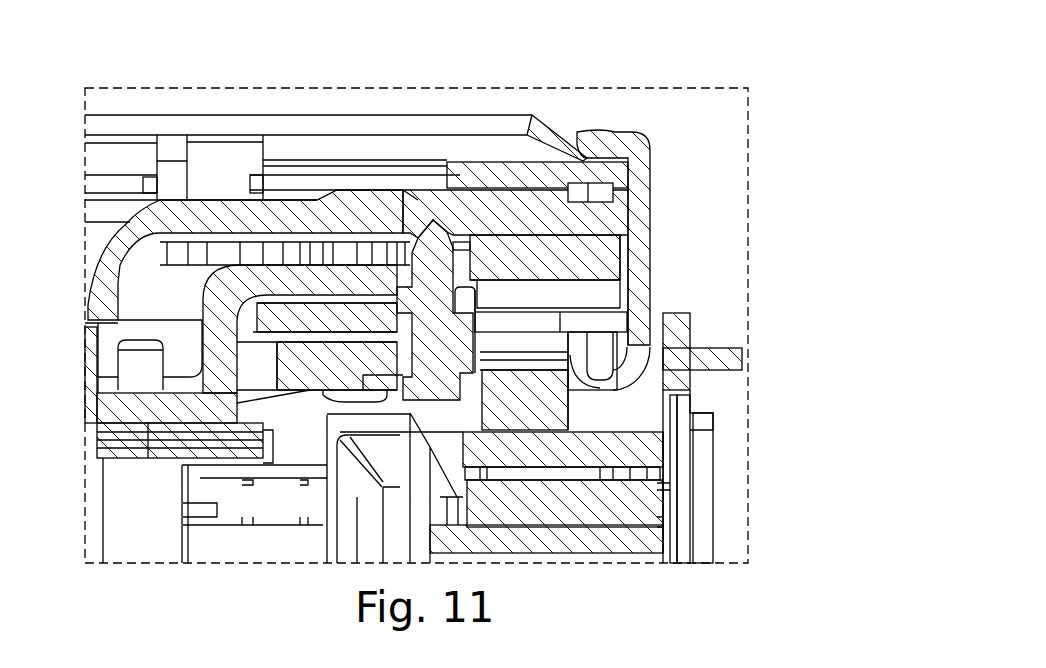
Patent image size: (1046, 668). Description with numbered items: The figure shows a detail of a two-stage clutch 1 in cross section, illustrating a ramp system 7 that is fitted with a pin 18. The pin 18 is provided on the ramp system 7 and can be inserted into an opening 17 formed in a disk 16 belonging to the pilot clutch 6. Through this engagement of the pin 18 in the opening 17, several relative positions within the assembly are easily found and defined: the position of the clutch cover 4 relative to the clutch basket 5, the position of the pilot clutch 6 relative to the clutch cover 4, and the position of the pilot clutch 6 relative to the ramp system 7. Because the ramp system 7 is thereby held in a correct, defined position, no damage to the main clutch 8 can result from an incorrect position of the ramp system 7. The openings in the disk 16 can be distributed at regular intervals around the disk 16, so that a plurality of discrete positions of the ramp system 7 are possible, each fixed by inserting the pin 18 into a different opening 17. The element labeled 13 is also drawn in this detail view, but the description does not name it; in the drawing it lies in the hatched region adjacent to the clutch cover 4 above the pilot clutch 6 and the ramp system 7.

The two-stage clutch 1 is at (119, 84).
The clutch cover 4 is at (642, 168).
The clutch basket 5 is at (683, 435).
The pilot clutch 6 is at (622, 242).
The ramp system 7 is at (479, 297).
The main clutch 8 is at (671, 517).
The upper bearing ring 13 is at (483, 173).
The disk 16 is at (612, 212).
The opening 17 is at (437, 205).
The pin 18 is at (426, 237).